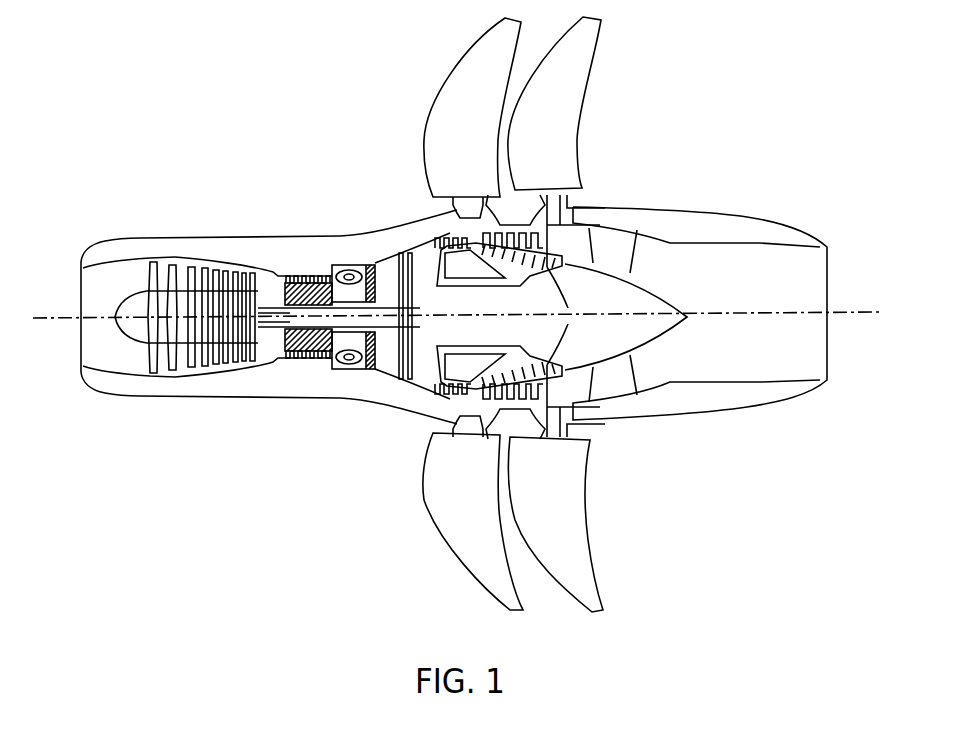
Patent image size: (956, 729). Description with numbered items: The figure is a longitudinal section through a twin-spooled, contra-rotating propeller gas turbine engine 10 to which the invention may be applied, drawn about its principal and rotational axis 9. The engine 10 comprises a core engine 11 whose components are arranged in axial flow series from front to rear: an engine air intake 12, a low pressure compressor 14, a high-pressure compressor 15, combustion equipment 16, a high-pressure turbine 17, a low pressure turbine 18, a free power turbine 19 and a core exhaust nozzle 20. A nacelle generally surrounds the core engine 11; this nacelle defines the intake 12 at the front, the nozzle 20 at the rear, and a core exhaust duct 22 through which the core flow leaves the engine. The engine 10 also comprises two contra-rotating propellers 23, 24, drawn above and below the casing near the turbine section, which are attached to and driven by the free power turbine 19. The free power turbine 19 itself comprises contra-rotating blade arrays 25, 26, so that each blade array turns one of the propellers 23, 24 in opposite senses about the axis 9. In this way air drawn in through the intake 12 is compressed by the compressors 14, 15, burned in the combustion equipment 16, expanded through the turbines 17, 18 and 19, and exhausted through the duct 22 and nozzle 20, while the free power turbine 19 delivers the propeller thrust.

The principal and rotational axis 9 is at (63, 319).
The gas turbine engine 10 is at (455, 314).
The core engine 11 is at (333, 262).
The engine air intake 12 is at (79, 360).
The low pressure compressor 14 is at (173, 363).
The high-pressure compressor 15 is at (283, 338).
The combustion equipment 16 is at (347, 362).
The high-pressure turbine 17 is at (383, 358).
The low pressure turbine 18 is at (430, 316).
The free power turbine 19 is at (432, 218).
The core exhaust nozzle 20 is at (828, 381).
The core exhaust duct 22 is at (760, 361).
The contra-rotating propeller 23 is at (467, 505).
The contra-rotating propeller 24 is at (565, 543).
The contra-rotating blade array 25 is at (437, 232).
The contra-rotating blade array 26 is at (550, 285).